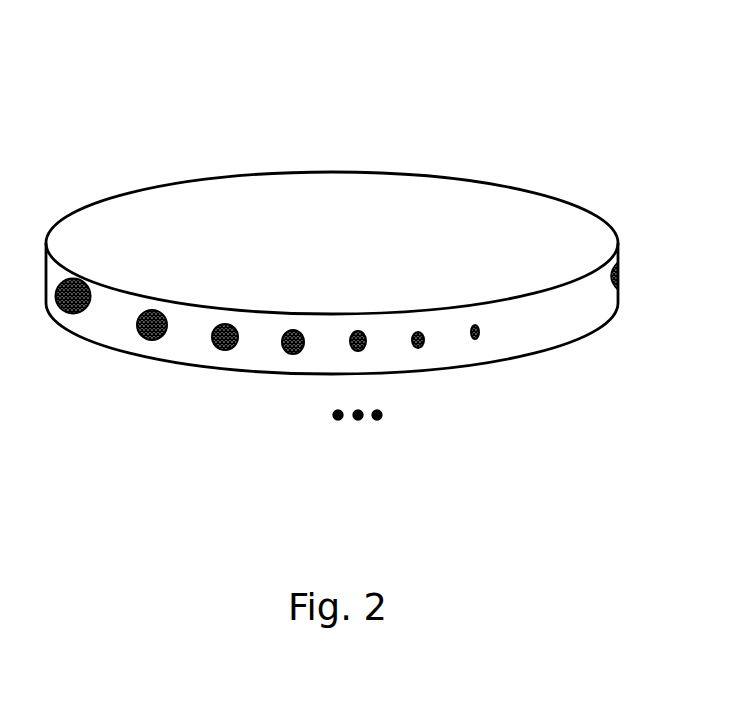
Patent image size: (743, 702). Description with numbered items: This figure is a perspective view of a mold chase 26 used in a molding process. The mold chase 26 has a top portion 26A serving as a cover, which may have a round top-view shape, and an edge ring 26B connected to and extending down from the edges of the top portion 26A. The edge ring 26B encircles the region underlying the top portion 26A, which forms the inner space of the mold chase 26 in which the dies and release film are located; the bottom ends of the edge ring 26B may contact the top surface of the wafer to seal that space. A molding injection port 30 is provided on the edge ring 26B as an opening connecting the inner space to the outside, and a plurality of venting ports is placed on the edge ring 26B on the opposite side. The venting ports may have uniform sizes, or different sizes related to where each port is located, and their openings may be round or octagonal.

The mold chase 26 is at (393, 215).
The top portion 26A is at (568, 220).
The edge ring 26B is at (582, 318).
The molding injection port 30 is at (620, 272).